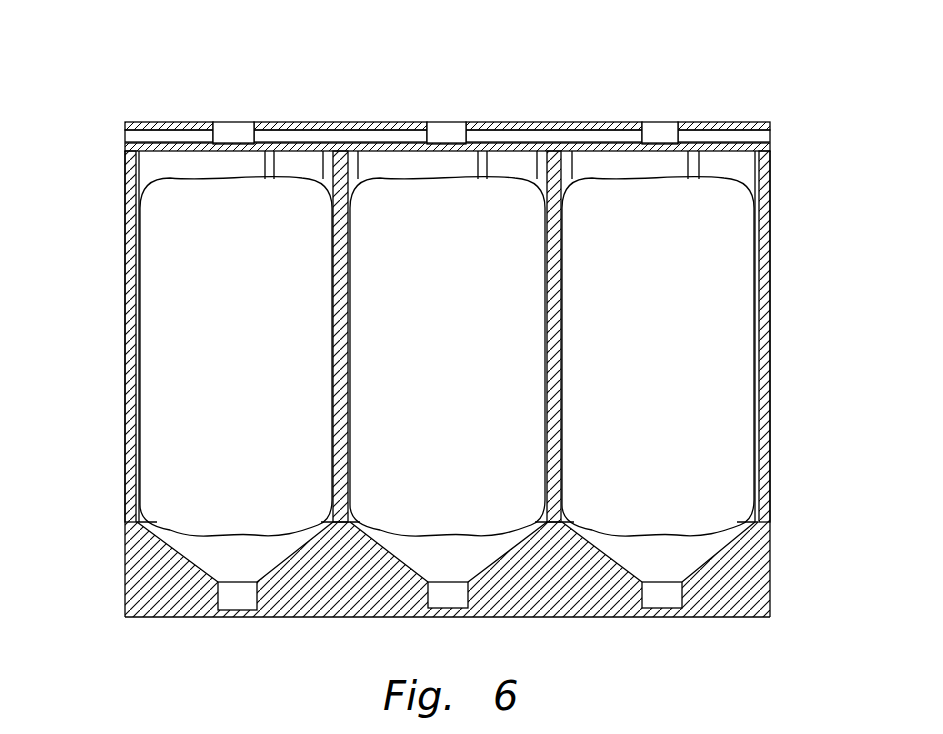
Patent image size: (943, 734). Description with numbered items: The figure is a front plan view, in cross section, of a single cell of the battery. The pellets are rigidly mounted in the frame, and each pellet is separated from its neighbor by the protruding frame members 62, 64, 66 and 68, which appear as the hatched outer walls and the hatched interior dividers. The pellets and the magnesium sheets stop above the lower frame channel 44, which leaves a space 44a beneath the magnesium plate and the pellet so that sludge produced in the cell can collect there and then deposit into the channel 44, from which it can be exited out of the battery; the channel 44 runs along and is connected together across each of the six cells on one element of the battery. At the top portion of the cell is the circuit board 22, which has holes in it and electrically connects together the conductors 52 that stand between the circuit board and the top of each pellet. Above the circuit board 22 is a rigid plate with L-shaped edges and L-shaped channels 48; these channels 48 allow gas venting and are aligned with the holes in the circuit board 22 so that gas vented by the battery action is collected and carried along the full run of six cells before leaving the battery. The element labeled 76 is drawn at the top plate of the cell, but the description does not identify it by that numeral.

The circuit board 22 is at (123, 152).
The L-shaped channel 48 is at (236, 132).
The conductor 52 is at (277, 173).
The protruding frame member 66 is at (360, 171).
The protruding frame member 64 is at (576, 171).
The top plate 76 is at (660, 122).
The protruding frame member 62 is at (771, 183).
The protruding frame member 68 is at (124, 177).
The space 44a is at (213, 559).
The lower frame channel 44 is at (243, 593).